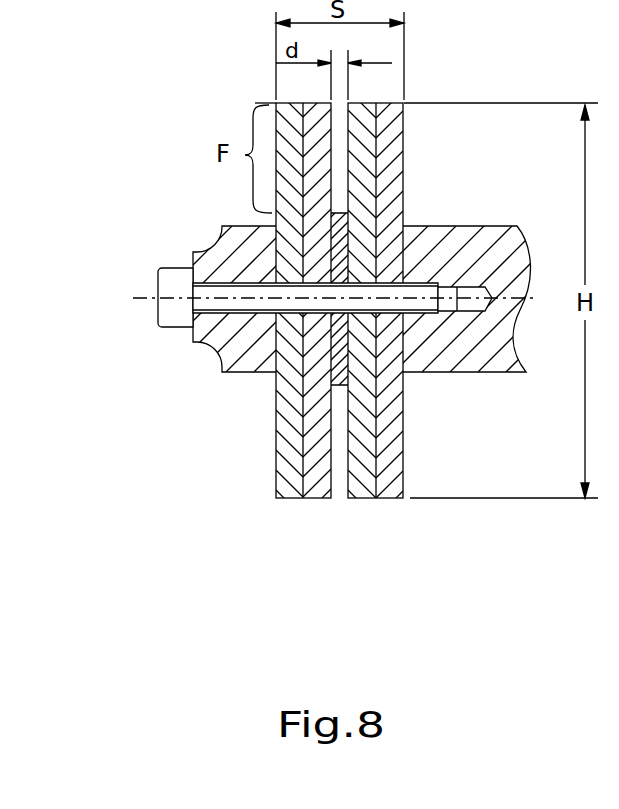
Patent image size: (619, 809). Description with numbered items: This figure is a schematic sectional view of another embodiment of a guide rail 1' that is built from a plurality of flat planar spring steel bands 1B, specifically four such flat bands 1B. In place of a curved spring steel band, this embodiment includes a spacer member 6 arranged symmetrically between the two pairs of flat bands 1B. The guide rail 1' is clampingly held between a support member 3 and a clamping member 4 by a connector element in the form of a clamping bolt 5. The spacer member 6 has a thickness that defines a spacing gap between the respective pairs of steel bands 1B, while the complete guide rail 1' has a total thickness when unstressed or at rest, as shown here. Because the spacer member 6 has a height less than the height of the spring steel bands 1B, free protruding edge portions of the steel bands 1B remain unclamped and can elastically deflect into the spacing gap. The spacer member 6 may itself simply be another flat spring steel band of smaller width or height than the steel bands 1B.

The flat planar spring steel band 1B is at (390, 483).
The guide rail 1' is at (158, 450).
The support member 3 is at (432, 258).
The clamping member 4 is at (238, 330).
The clamping bolt 5 is at (170, 283).
The spacer member 6 is at (327, 352).